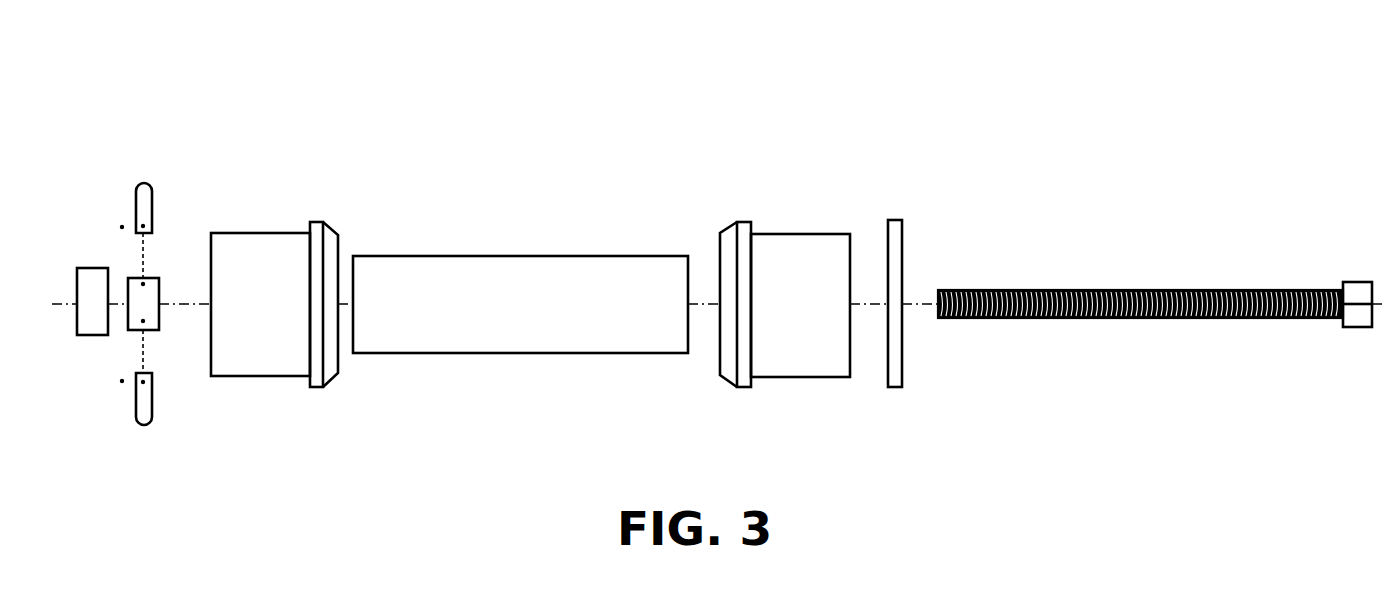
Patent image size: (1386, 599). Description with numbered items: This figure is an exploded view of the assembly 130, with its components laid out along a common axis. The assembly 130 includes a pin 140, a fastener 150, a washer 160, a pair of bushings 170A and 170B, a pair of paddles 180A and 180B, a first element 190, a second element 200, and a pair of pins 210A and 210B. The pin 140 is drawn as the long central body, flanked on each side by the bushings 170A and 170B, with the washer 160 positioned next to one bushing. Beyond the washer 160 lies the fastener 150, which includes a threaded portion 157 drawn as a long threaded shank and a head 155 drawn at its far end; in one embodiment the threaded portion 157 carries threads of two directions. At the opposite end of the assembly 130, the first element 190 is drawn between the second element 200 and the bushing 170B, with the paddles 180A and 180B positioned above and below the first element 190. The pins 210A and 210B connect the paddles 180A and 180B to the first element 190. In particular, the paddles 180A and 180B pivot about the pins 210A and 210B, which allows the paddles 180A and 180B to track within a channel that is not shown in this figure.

The assembly 130 is at (1143, 130).
The pin 140 is at (630, 340).
The fastener 150 is at (1155, 261).
The nut 155 is at (1358, 282).
The threaded portion 157 is at (1183, 318).
The washer 160 is at (888, 232).
The bushing 170A is at (807, 360).
The bushing 170B is at (265, 362).
The paddle 180A is at (136, 190).
The paddle 180B is at (137, 418).
The first element 190 is at (145, 284).
The second element 200 is at (76, 285).
The pin 210A is at (122, 227).
The pin 210B is at (122, 381).